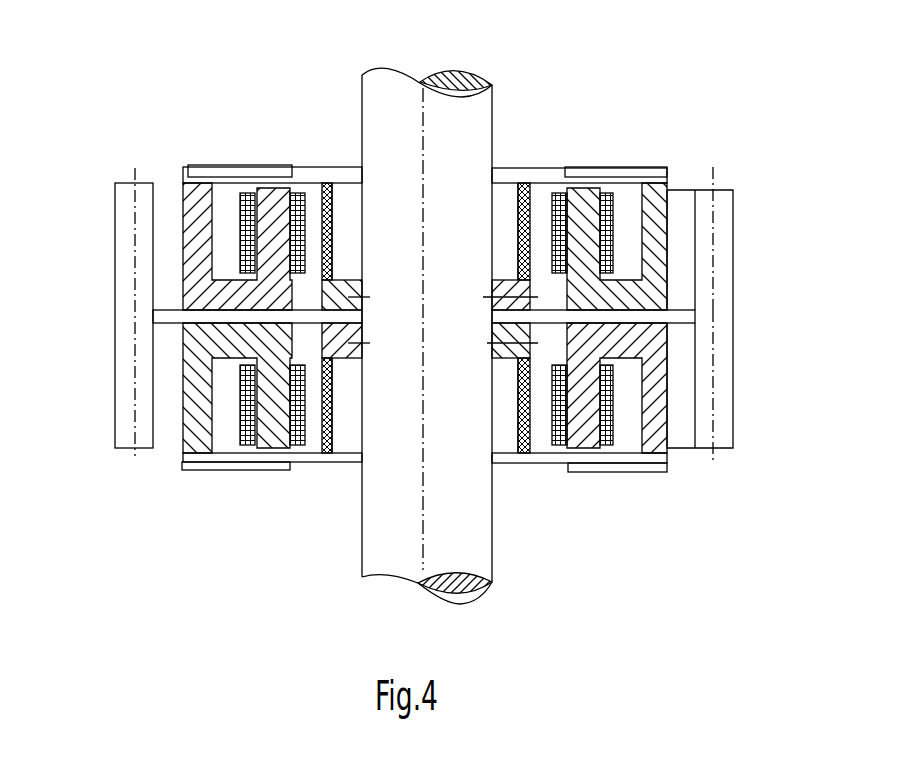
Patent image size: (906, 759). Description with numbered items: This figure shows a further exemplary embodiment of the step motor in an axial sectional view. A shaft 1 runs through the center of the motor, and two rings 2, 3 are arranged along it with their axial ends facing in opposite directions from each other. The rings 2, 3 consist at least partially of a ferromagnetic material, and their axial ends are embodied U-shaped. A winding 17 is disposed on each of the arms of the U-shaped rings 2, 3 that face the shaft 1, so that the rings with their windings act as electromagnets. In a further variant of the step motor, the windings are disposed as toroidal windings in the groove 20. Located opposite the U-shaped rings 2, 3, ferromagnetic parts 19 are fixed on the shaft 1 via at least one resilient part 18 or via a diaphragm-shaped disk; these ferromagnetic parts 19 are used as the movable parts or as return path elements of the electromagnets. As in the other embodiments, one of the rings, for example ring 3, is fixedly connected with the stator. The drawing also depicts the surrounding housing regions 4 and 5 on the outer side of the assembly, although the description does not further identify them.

The shaft 1 is at (475, 115).
The ring 2 is at (640, 292).
The ring 3 is at (205, 343).
The housing upper part 4 is at (680, 233).
The housing lower part 5 is at (682, 362).
The winding 17 is at (242, 220).
The resilient part 18 is at (323, 167).
The ferromagnetic part 19 is at (218, 167).
The groove 20 is at (623, 198).